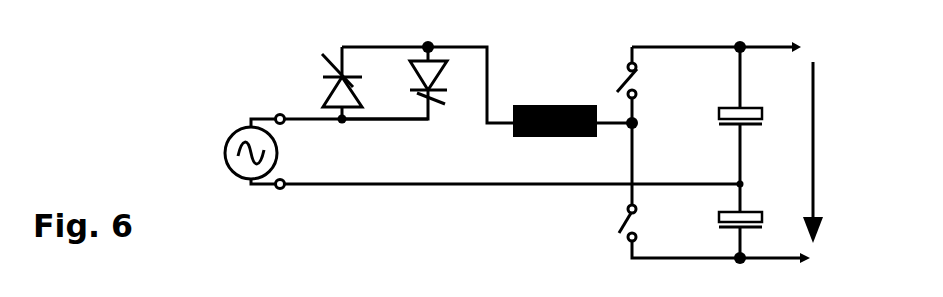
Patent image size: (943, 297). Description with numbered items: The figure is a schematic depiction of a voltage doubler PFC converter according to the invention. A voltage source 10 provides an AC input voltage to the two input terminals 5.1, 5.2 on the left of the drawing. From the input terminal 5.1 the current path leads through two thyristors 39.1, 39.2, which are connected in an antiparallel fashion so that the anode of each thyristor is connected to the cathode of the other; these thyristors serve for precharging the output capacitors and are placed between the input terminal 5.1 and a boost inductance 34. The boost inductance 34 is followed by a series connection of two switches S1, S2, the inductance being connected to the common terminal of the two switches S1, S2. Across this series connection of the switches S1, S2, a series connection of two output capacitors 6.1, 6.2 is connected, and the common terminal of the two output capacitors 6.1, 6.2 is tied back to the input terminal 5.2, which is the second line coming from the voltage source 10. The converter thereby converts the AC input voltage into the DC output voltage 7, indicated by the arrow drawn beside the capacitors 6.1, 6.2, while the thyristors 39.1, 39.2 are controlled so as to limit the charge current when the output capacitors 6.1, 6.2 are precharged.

The voltage source 10 is at (222, 152).
The input terminal 5.1 is at (275, 116).
The input terminal 5.2 is at (276, 189).
The thyristor 39.1 is at (327, 100).
The thyristor 39.2 is at (413, 58).
The boost inductance 34 is at (552, 104).
The switch S1 is at (625, 67).
The switch S2 is at (619, 241).
The output capacitor 6.1 is at (758, 107).
The output capacitor 6.2 is at (758, 211).
The DC output voltage 7 is at (815, 145).